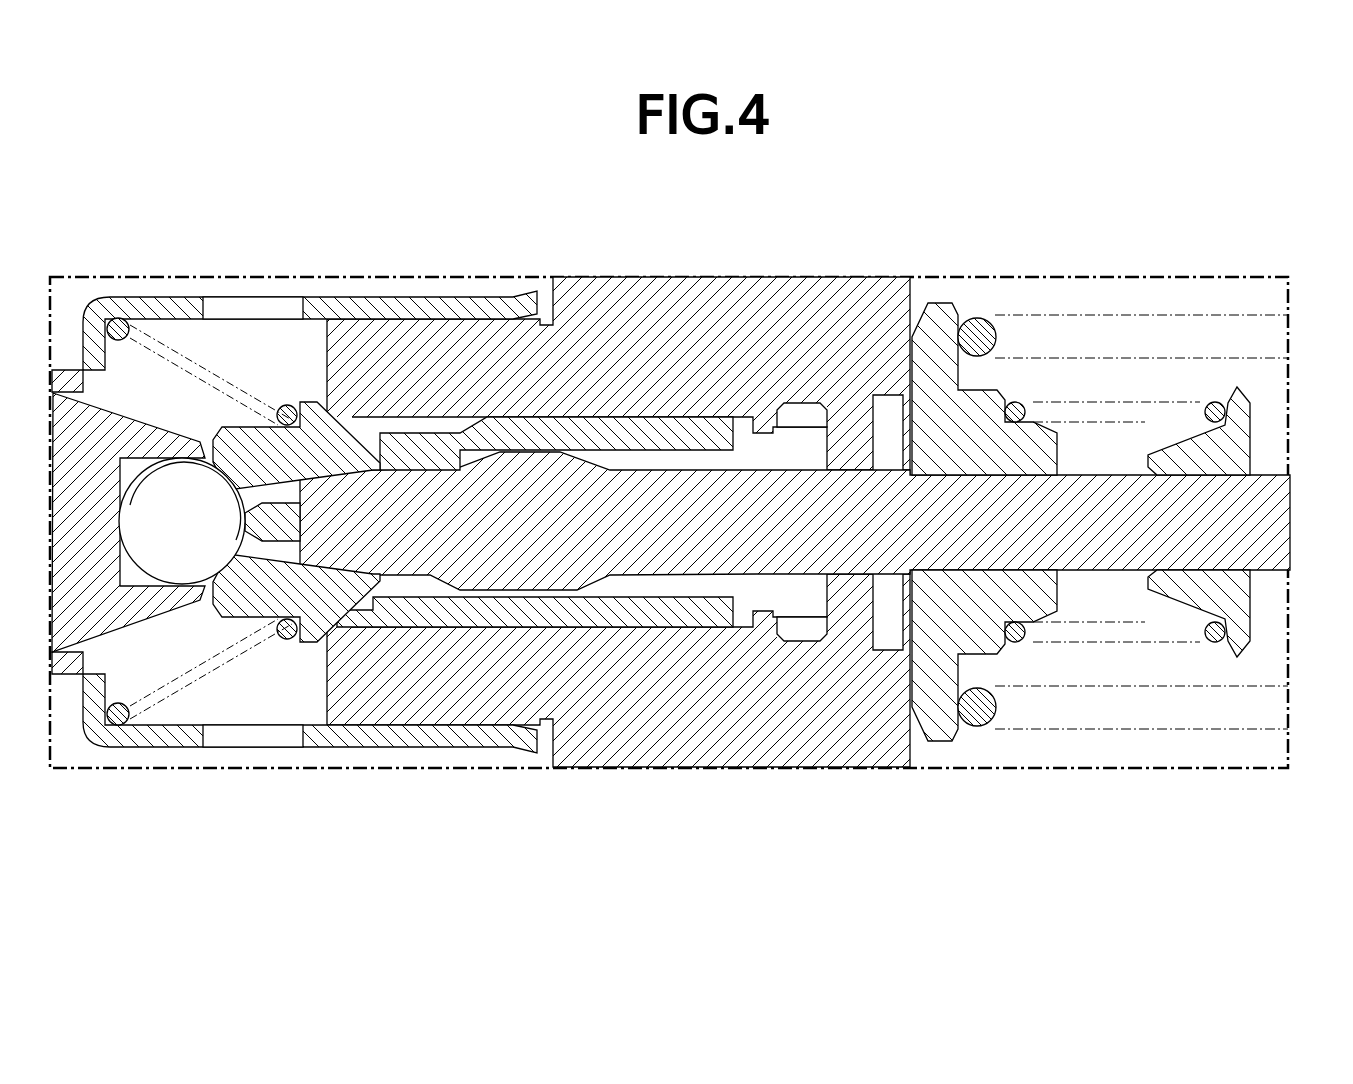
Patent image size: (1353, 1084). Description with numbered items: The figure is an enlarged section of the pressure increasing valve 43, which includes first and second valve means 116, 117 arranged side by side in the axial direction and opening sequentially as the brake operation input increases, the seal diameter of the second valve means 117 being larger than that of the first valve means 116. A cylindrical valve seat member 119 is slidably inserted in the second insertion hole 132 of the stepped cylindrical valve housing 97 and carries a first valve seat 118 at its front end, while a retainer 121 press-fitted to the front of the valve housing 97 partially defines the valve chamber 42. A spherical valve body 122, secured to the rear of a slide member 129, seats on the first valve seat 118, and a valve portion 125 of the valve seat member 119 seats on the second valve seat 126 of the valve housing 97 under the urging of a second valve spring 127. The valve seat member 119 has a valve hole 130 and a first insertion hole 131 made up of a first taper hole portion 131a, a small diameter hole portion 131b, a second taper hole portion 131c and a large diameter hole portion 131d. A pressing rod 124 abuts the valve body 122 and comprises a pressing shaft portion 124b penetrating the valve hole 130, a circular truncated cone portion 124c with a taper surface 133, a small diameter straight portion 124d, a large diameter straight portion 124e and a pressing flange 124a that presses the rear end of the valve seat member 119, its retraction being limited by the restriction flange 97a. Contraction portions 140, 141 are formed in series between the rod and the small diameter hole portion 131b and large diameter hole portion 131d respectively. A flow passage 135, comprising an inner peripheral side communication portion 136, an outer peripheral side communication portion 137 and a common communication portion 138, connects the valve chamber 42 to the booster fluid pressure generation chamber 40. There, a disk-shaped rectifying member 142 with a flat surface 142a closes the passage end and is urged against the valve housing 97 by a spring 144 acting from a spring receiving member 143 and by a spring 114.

The booster fluid pressure generation chamber 40 is at (1131, 295).
The valve chamber 42 is at (115, 663).
The pressure increasing valve 43 is at (307, 824).
The valve housing 97 is at (691, 300).
The restriction flange 97a is at (847, 455).
The spring 114 is at (980, 325).
The first valve means 116 is at (188, 626).
The second valve means 117 is at (318, 662).
The first valve seat 118 is at (150, 468).
The valve seat member 119 is at (680, 618).
The retainer 121 is at (133, 297).
The valve body 122 is at (245, 520).
The pressing rod 124 is at (1113, 493).
The pressing flange 124a is at (763, 437).
The pressing shaft portion 124b is at (268, 537).
The circular truncated cone portion 124c is at (285, 405).
The small diameter straight portion 124d is at (430, 578).
The large diameter straight portion 124e is at (507, 477).
The valve portion 125 is at (307, 653).
The second valve seat 126 is at (367, 612).
The second valve spring 127 is at (272, 402).
The slide member 129 is at (55, 372).
The valve hole 130 is at (242, 530).
The first insertion hole 131 is at (625, 455).
The first taper hole portion 131a is at (250, 458).
The small diameter hole portion 131b is at (358, 426).
The second taper hole portion 131c is at (436, 462).
The large diameter hole portion 131d is at (568, 462).
The second insertion hole 132 is at (614, 604).
The taper surface 133 is at (337, 610).
The flow passage 135 is at (744, 618).
The inner peripheral side communication portion 136 is at (660, 590).
The outer peripheral side communication portion 137 is at (407, 430).
The common communication portion 138 is at (807, 412).
The contraction portion 140 is at (353, 575).
The contraction portion 141 is at (534, 576).
The rectifying member 142 is at (940, 733).
The flat surface 142a is at (900, 682).
The spring receiving member 143 is at (1247, 413).
The spring 144 is at (1207, 638).